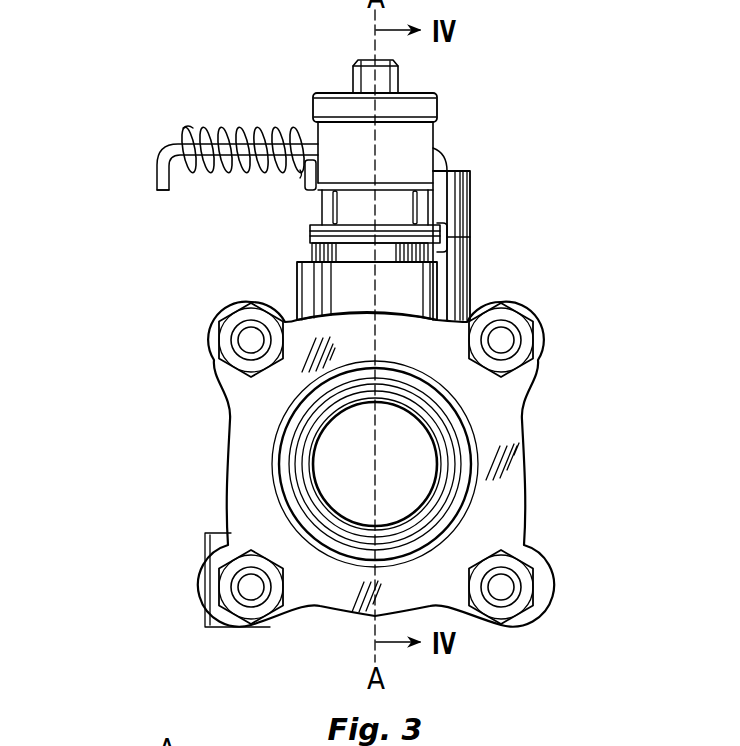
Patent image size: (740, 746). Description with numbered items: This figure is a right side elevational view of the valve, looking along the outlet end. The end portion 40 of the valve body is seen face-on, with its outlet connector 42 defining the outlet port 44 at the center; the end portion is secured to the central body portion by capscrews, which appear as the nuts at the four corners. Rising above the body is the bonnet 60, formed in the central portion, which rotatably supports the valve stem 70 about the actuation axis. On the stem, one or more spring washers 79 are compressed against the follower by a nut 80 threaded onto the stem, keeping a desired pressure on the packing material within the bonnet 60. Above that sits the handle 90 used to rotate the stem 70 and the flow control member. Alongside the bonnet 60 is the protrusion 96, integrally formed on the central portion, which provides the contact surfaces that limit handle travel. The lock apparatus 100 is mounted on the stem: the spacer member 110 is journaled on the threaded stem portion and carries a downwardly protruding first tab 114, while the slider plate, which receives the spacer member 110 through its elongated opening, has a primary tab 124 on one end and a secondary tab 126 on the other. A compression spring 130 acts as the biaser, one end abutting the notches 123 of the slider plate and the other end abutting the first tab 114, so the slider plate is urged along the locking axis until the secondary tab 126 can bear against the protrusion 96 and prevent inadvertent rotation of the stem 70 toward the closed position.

The end portion 40 is at (530, 490).
The outlet connector 42 is at (463, 407).
The outlet port 44 is at (421, 484).
The bonnet 60 is at (306, 289).
The valve stem 70 is at (348, 70).
The spring washers 79 is at (446, 238).
The nut 80 is at (375, 206).
The handle 90 is at (437, 103).
The protrusion 96 is at (470, 286).
The lock apparatus 100 is at (170, 210).
The spacer member 110 is at (296, 182).
The first tab 114 is at (310, 190).
The notches 123 is at (186, 125).
The primary tab 124 is at (157, 188).
The secondary tab 126 is at (443, 152).
The compression spring 130 is at (232, 126).